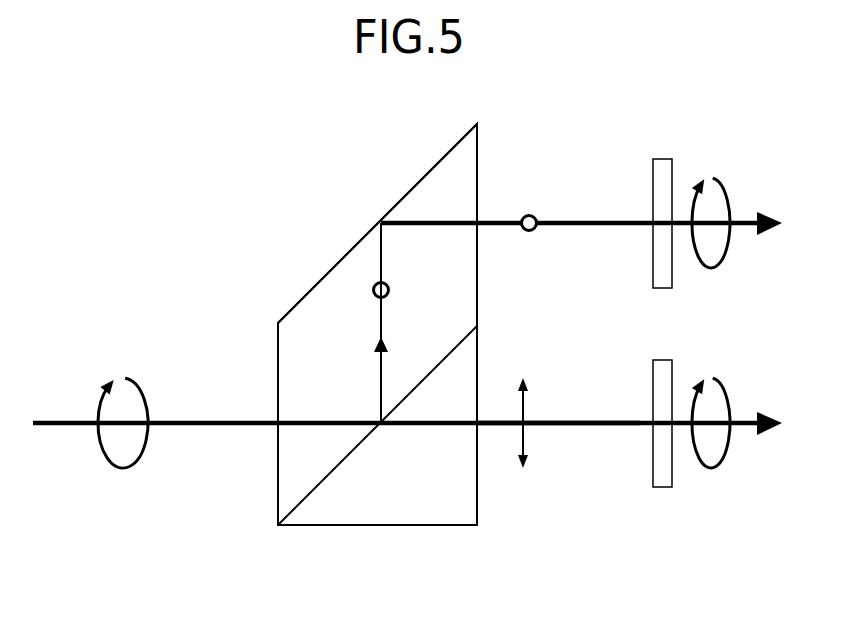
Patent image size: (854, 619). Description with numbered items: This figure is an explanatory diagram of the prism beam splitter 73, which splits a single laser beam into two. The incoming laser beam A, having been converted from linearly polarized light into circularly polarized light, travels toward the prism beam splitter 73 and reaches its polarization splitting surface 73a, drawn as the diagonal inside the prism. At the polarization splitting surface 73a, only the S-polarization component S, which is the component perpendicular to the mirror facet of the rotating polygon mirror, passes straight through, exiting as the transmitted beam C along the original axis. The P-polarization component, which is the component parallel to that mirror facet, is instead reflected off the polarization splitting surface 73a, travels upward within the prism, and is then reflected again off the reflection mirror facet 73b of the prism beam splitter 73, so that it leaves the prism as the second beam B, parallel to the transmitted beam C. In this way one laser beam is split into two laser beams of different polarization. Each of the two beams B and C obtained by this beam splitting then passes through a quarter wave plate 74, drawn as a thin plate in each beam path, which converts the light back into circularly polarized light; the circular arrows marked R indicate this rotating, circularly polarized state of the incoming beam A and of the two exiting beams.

The prism beam splitter 73 is at (318, 525).
The polarization splitting surface 73a is at (342, 466).
The reflection mirror facet 73b is at (462, 152).
The quarter wave plate 74 is at (660, 283).
The laser beam A is at (52, 420).
The reflected light beam B is at (587, 227).
The transmitted light beam C is at (568, 418).
The S-polarization component S is at (523, 439).
The rotation direction R is at (424, 338).